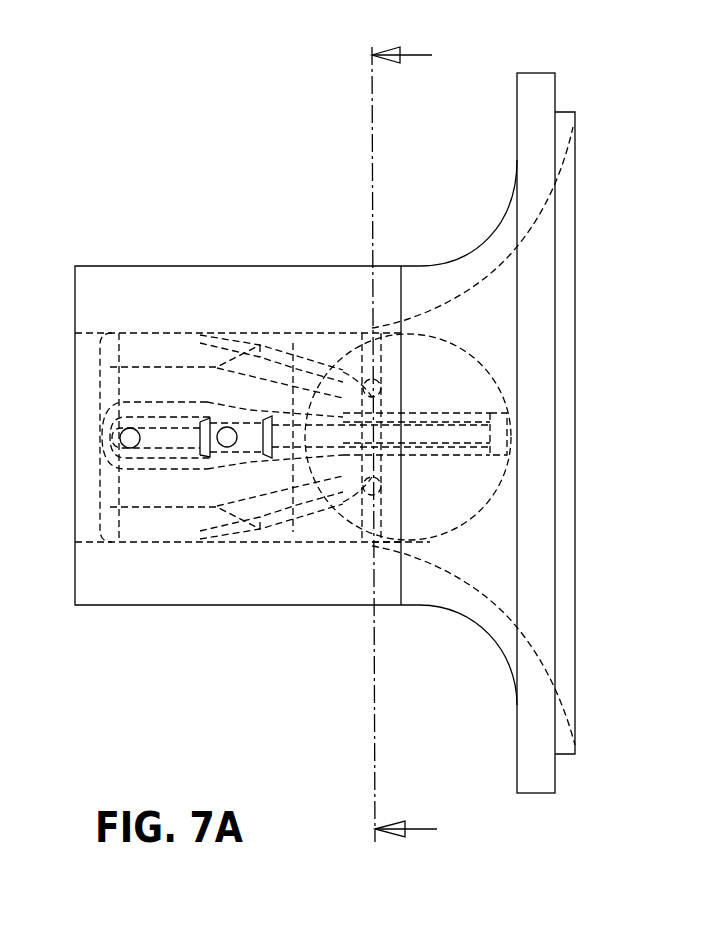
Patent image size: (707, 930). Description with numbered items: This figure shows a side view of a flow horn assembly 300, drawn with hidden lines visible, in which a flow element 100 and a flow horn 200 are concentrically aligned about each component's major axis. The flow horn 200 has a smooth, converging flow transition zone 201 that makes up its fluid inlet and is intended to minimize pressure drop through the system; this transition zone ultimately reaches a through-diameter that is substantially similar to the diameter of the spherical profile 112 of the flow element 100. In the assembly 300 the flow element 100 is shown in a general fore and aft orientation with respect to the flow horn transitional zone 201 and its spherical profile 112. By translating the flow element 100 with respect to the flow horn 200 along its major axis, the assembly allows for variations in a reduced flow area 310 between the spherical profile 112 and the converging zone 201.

The flow element 100 is at (486, 351).
The spherical profile 112 is at (445, 510).
The flow horn 200 is at (487, 179).
The converging flow transition zone 201 is at (483, 580).
The flow horn assembly 300 is at (217, 205).
The reduced flow area 310 is at (423, 542).